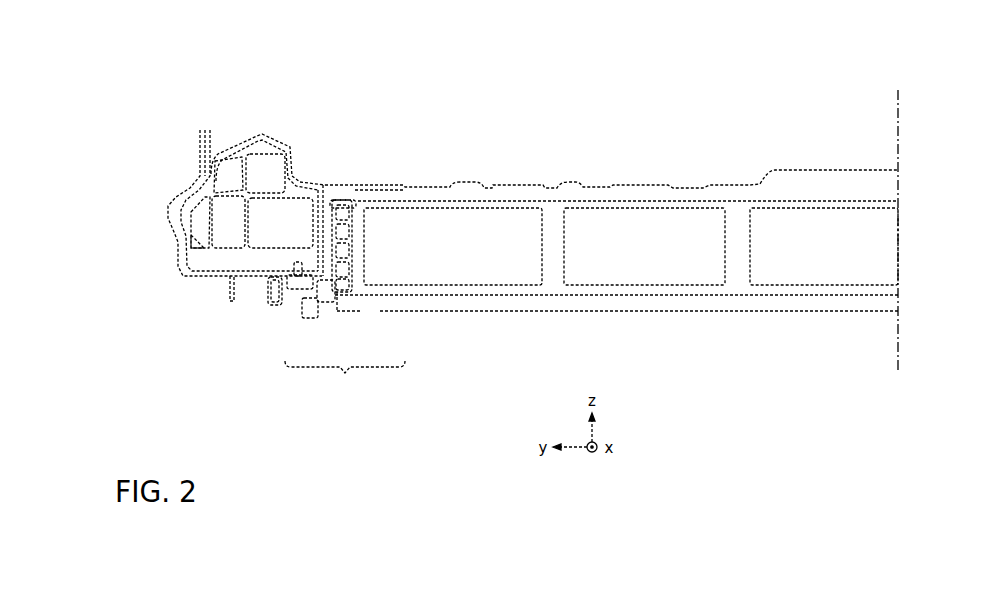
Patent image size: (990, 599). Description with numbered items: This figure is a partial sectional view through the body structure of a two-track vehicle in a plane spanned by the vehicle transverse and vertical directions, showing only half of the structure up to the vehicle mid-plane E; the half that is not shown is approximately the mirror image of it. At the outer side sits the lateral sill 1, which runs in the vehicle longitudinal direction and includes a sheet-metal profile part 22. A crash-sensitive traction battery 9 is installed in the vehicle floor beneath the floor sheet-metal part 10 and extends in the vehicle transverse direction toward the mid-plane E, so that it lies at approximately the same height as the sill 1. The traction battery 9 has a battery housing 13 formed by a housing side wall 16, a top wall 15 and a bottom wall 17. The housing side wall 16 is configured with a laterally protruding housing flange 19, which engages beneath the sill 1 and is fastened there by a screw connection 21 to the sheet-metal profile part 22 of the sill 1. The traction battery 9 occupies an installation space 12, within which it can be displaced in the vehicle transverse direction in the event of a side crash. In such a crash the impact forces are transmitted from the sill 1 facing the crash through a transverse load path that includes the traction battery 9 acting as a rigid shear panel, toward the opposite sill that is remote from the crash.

The sill 1 is at (182, 277).
The traction battery 9 is at (888, 241).
The floor sheet-metal part 10 is at (335, 185).
The installation space 12 is at (365, 190).
The battery housing 13 is at (345, 382).
The top wall 15 is at (389, 201).
The housing side wall 16 is at (342, 252).
The bottom wall 17 is at (392, 295).
The housing flange 19 is at (317, 295).
The screw connection 21 is at (297, 285).
The sheet-metal profile part 22 is at (255, 274).
The vehicle mid-plane E is at (898, 124).